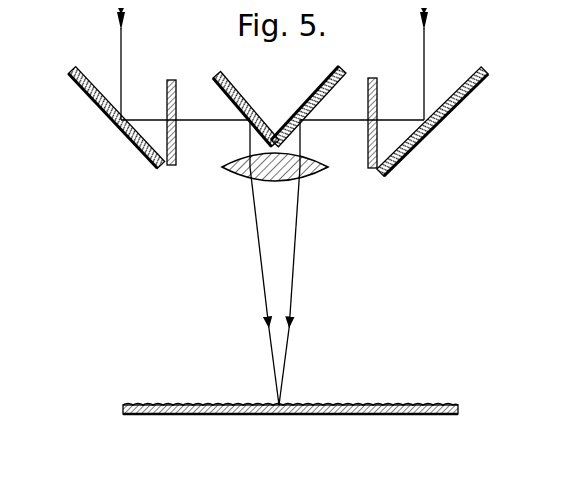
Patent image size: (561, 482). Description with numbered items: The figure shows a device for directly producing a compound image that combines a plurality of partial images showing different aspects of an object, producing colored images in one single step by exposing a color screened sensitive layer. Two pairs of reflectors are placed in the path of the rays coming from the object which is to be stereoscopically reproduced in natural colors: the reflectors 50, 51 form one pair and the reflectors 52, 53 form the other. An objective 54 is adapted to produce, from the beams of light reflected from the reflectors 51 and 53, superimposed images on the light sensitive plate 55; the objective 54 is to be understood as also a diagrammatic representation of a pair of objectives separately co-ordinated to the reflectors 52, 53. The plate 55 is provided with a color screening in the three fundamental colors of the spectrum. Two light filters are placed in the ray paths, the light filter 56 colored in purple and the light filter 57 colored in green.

The reflector 50 is at (440, 120).
The reflector 51 is at (317, 91).
The reflector 52 is at (111, 115).
The reflector 53 is at (233, 93).
The objective 54 is at (250, 182).
The light sensitive plate 55 is at (190, 415).
The light filter 56 is at (373, 78).
The light filter 57 is at (169, 80).